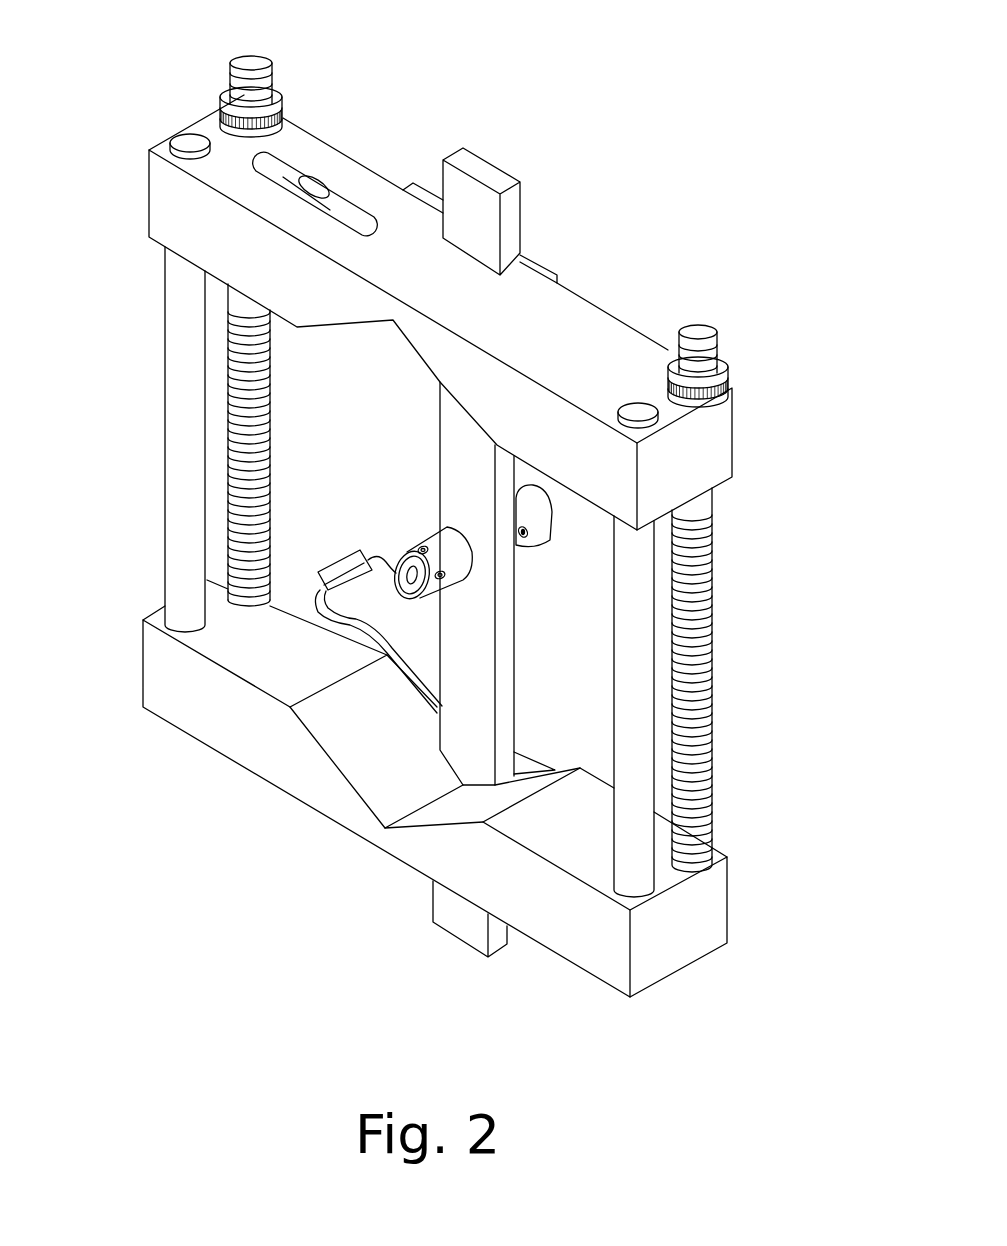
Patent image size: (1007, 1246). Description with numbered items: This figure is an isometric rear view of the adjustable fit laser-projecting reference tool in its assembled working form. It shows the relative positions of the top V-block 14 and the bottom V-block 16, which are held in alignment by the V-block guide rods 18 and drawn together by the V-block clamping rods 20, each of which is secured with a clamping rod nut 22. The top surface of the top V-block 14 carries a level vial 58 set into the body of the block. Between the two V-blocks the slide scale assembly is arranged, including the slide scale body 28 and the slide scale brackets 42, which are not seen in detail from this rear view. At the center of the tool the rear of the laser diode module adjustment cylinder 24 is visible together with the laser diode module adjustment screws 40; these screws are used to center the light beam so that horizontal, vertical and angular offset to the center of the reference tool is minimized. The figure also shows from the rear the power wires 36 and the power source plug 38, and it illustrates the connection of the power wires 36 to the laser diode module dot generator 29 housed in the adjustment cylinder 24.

The top V-block 14 is at (362, 178).
The bottom V-block 16 is at (197, 715).
The V-block guide rod 18 is at (182, 138).
The V-block clamping rod 20 is at (250, 62).
The clamping rod nut 22 is at (275, 98).
The laser diode module adjustment cylinder 24 is at (538, 522).
The slide scale body 28 is at (490, 174).
The laser diode module dot generator 29 is at (418, 592).
The power wires 36 is at (373, 547).
The power source plug 38 is at (333, 560).
The laser diode module adjustment screw 40 is at (440, 573).
The slide scale bracket 42 is at (540, 267).
The level vial 58 is at (280, 162).